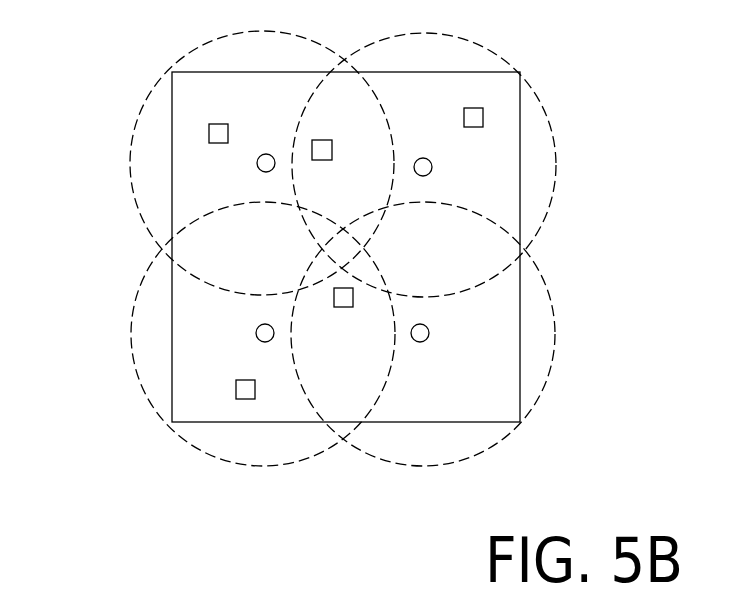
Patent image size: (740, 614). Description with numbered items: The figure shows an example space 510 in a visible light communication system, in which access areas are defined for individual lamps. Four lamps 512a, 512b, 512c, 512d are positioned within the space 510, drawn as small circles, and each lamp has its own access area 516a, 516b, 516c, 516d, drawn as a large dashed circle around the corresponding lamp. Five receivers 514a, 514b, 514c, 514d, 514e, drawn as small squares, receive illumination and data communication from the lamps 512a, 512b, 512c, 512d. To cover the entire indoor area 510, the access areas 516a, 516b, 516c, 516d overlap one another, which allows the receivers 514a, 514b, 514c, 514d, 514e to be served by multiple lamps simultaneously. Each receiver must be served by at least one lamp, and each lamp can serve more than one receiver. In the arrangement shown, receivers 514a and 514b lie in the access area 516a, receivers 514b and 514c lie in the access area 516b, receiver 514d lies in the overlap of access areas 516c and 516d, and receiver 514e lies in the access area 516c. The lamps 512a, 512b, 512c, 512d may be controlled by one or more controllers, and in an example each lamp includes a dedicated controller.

The space 510 is at (170, 155).
The lamp 512a is at (257, 165).
The lamp 512b is at (432, 167).
The lamp 512c is at (256, 333).
The lamp 512d is at (429, 335).
The receiver 514a is at (228, 126).
The receiver 514b is at (332, 140).
The receiver 514c is at (464, 112).
The receiver 514d is at (347, 307).
The receiver 514e is at (236, 380).
The access area 516a is at (155, 93).
The access area 516b is at (483, 50).
The access area 516c is at (137, 348).
The access area 516d is at (547, 372).